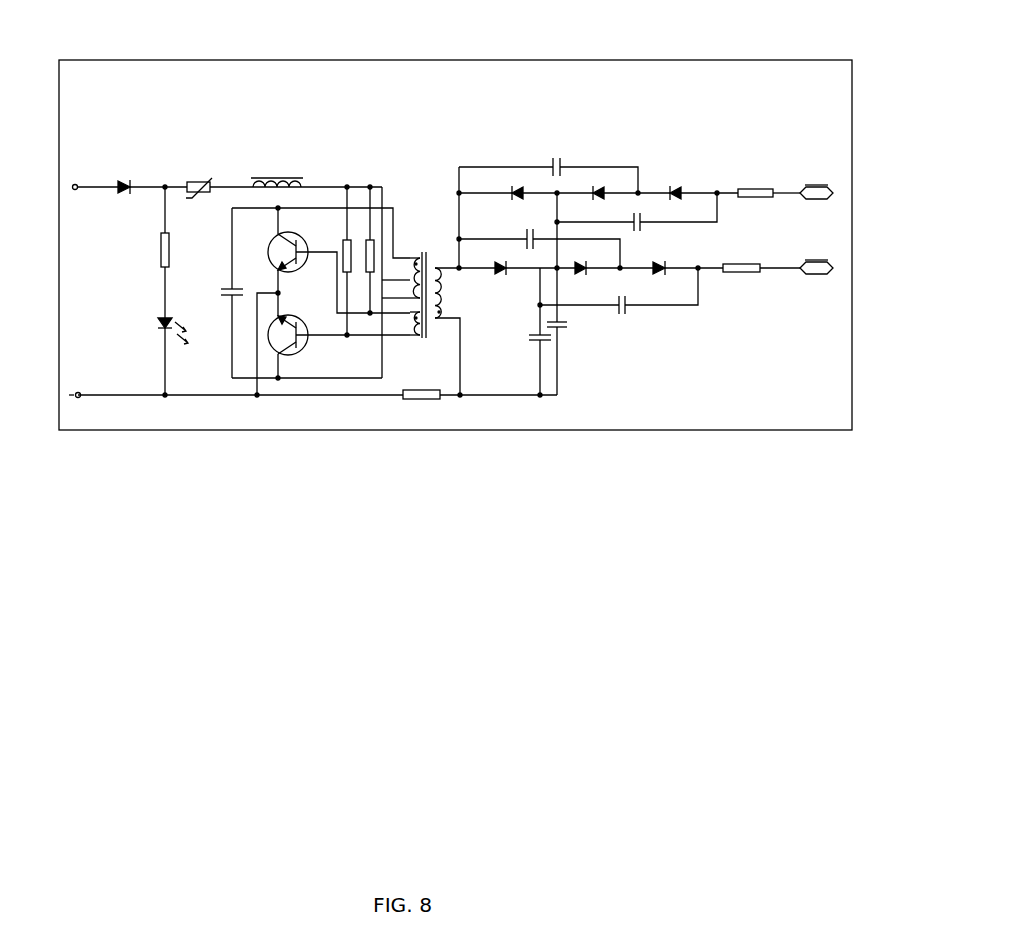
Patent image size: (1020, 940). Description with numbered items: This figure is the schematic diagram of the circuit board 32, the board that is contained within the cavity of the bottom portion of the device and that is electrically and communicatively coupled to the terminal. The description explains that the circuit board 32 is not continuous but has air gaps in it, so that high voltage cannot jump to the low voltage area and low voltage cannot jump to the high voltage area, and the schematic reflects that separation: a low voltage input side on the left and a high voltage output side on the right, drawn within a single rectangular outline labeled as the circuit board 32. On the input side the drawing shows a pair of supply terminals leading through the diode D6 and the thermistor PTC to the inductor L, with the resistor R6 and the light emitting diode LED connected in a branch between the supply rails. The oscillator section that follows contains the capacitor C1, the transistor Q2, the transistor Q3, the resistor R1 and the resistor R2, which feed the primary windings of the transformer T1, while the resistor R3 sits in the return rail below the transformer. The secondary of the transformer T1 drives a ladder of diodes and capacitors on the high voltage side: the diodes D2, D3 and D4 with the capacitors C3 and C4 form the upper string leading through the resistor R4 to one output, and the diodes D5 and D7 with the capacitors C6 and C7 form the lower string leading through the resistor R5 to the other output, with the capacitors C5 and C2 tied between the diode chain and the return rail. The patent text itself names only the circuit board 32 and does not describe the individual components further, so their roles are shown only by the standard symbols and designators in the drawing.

The circuit board 32 is at (567, 97).
The diode D6 is at (346, 234).
The PTC thermistor PTC is at (188, 193).
The inductor L is at (278, 194).
The resistor R6 is at (181, 227).
The light emitting diode LED is at (185, 331).
The resistor R3 is at (421, 386).
The capacitor C1 is at (239, 292).
The transistor Q2 is at (295, 263).
The transistor Q3 is at (300, 345).
The resistor R1 is at (334, 275).
The resistor R2 is at (363, 261).
The transformer T1 is at (425, 287).
The capacitor C3 is at (582, 164).
The diode D2 is at (512, 200).
The diode D3 is at (586, 200).
The diode D4 is at (678, 197).
The resistor R4 is at (756, 204).
The capacitor C4 is at (665, 225).
The capacitor C6 is at (530, 246).
The diode D5 is at (496, 276).
The diode D7 is at (662, 272).
The resistor R5 is at (741, 279).
The capacitor C5 is at (513, 342).
The capacitor C2 is at (575, 328).
The capacitor C7 is at (641, 311).